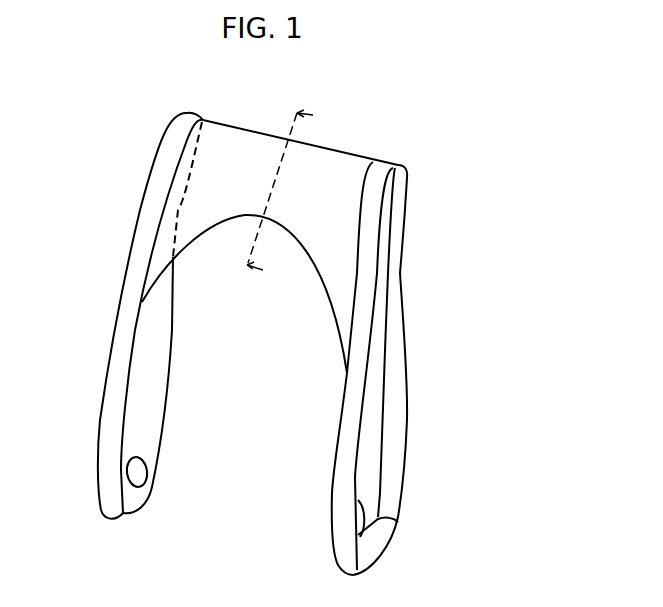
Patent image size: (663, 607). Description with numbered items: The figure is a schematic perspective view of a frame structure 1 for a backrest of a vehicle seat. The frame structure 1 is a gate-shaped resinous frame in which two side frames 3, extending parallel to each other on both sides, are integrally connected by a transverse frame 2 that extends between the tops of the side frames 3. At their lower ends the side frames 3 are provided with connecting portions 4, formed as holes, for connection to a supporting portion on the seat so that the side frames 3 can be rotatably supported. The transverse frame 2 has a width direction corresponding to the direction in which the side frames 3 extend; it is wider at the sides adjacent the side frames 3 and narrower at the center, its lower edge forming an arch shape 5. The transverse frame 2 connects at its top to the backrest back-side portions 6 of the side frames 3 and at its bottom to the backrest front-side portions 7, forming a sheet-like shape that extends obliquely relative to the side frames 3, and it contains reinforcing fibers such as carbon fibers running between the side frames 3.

The frame structure 1 is at (437, 153).
The transverse frame 2 is at (328, 173).
The side frames 3 is at (153, 378).
The connecting portions 4 is at (140, 472).
The arch shape 5 is at (204, 232).
The backrest back-side portions 6 is at (390, 278).
The backrest front-side portions 7 is at (125, 332).